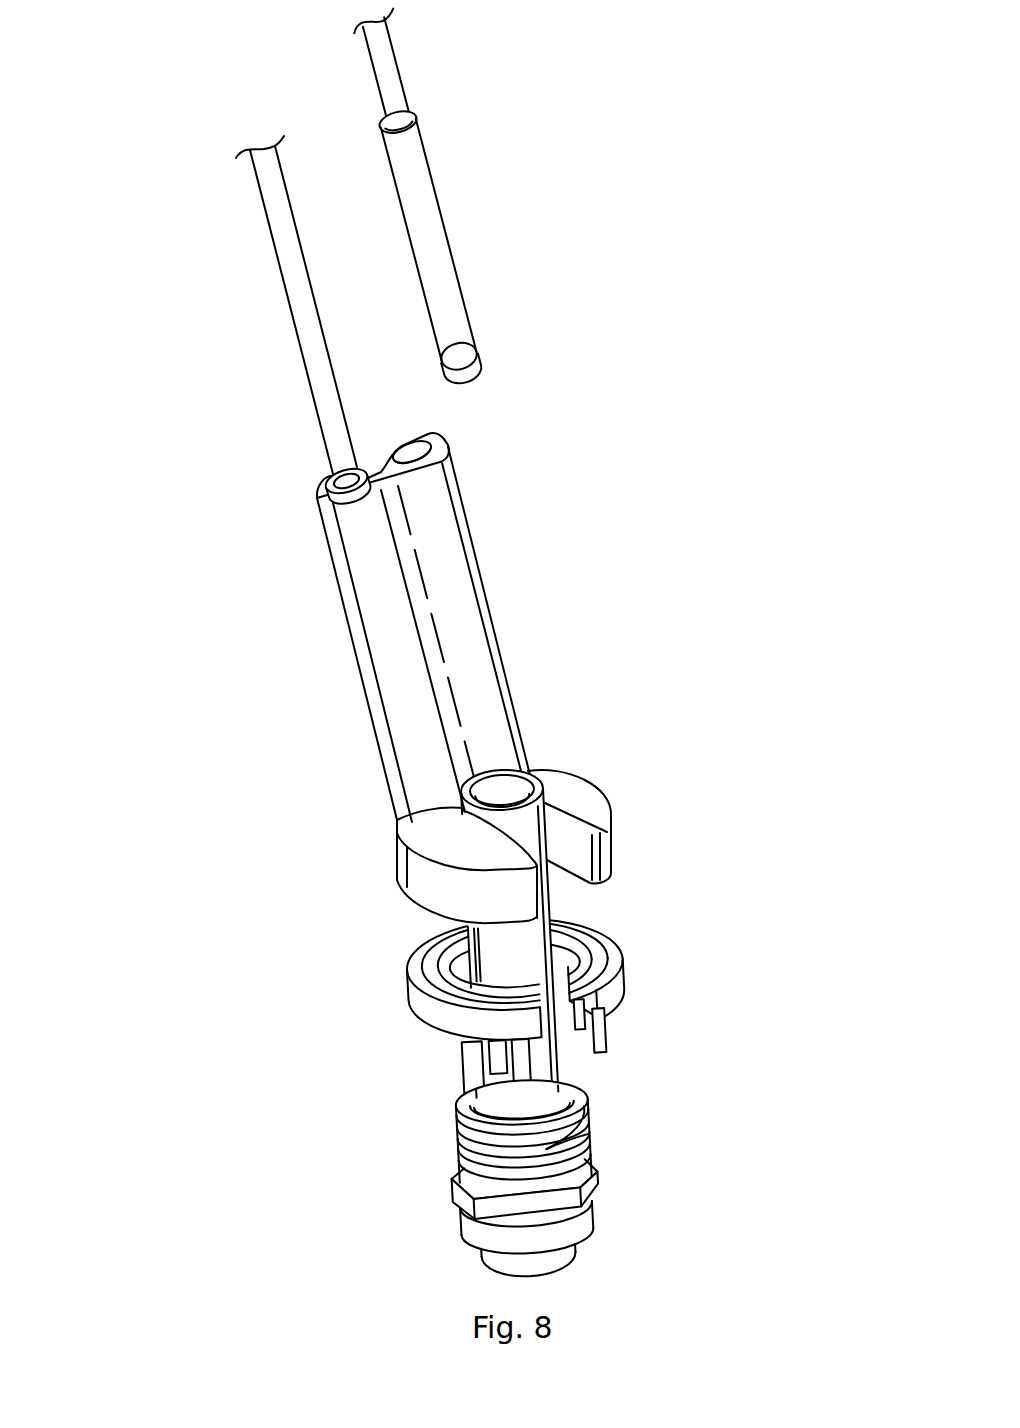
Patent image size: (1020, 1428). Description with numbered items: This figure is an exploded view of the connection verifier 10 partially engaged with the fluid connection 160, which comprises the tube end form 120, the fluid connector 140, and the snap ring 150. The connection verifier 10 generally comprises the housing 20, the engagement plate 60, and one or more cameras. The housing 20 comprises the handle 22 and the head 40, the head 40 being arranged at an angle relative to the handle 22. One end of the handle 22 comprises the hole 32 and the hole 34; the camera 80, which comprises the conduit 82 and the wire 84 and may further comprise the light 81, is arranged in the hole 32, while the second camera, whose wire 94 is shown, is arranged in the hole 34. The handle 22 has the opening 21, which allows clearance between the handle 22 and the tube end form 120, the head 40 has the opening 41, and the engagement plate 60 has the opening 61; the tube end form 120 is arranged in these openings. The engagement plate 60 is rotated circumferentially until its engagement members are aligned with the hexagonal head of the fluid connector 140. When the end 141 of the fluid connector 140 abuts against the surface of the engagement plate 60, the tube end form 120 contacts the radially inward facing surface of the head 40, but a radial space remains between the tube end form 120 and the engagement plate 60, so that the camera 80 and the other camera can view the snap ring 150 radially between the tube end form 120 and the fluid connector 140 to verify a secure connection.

The connection verifier 10 is at (435, 644).
The housing 20 is at (448, 539).
The opening 21 is at (464, 636).
The handle 22 is at (377, 661).
The hole 32 is at (413, 450).
The hole 34 is at (328, 484).
The head 40 is at (428, 887).
The opening 41 is at (578, 895).
The engagement plate 60 is at (622, 980).
The opening 61 is at (575, 1046).
The camera 80 is at (488, 198).
The light 81 is at (478, 382).
The conduit 82 is at (452, 243).
The wire 84 is at (402, 85).
The wire 94 is at (282, 225).
The tube end form 120 is at (504, 781).
The fluid connector 140 is at (457, 1213).
The end 141 is at (470, 1095).
The snap ring 150 is at (592, 1127).
The fluid connection 160 is at (637, 1196).